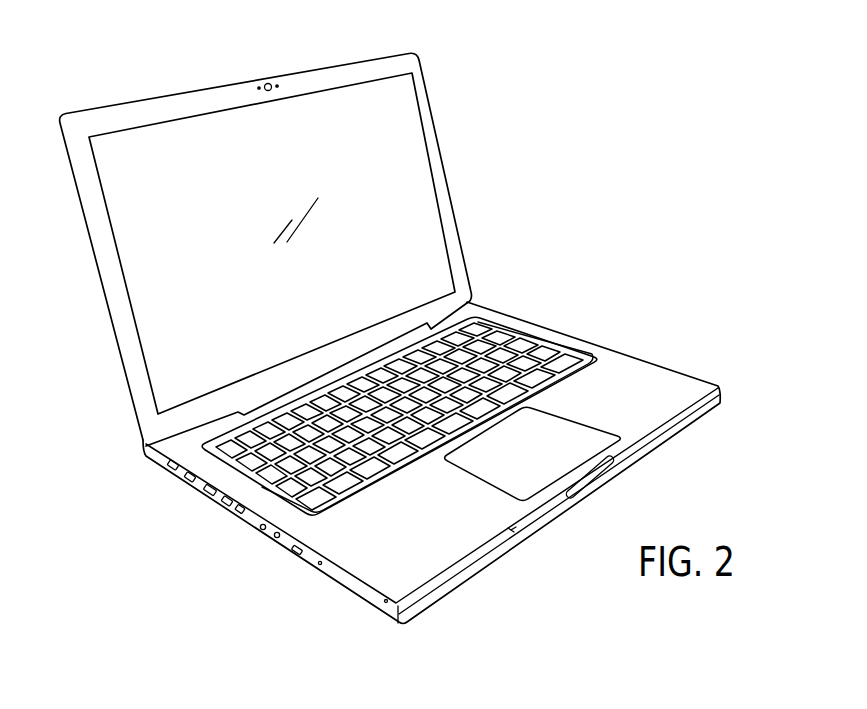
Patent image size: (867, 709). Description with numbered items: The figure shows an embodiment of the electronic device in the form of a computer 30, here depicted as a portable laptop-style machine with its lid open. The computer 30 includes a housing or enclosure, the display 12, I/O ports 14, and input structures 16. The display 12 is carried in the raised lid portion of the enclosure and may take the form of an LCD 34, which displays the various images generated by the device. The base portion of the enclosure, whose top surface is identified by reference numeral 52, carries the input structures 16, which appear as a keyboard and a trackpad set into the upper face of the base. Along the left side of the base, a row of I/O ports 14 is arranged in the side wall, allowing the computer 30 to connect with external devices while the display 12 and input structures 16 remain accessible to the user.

The computer 30 is at (212, 34).
The display 12 is at (424, 182).
The LCD 34 is at (414, 140).
The input structures 16 is at (527, 343).
The top case of base housing 52 is at (639, 357).
The I/O ports 14 is at (222, 512).